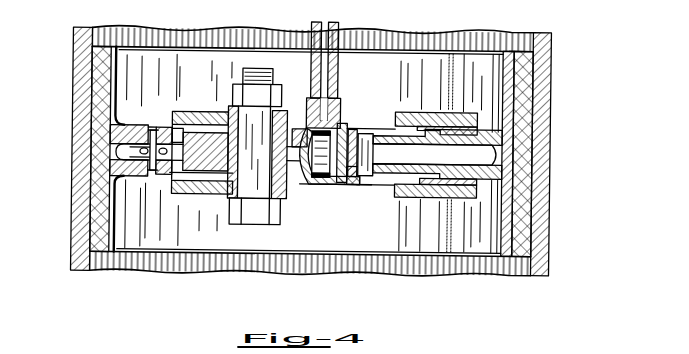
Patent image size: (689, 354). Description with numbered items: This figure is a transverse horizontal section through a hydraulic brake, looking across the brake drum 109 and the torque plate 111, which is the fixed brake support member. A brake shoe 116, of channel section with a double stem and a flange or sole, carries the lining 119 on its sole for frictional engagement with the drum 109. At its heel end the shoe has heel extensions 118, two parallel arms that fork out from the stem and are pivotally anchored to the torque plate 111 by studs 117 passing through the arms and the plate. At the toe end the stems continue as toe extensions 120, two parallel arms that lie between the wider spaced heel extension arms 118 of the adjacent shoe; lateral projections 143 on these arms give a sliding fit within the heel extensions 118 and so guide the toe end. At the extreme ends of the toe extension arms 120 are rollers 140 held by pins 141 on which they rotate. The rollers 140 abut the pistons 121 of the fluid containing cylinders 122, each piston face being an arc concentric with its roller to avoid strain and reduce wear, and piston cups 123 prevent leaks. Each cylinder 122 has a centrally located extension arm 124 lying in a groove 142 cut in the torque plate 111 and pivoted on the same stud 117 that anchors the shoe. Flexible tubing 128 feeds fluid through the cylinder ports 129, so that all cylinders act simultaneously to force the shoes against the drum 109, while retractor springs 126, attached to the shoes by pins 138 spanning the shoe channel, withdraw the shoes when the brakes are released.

The brake drum 109 is at (79, 91).
The torque plate 111 is at (194, 142).
The brake shoes 116 is at (124, 174).
The studs 117 is at (252, 191).
The heel extensions 118 is at (217, 113).
The lining 119 is at (92, 119).
The toe extensions 120 is at (445, 158).
The pistons 121 is at (354, 183).
The cylinders 122 is at (298, 184).
The piston cups 123 is at (348, 128).
The cylinder extension arms 124 is at (297, 129).
The retractor springs 126 is at (117, 150).
The flexible tubing 128 is at (337, 32).
The cylinder ports 129 is at (338, 100).
The pins 138 is at (153, 132).
The rollers 140 is at (383, 151).
The pins 141 is at (373, 182).
The grooves 142 is at (213, 157).
The lateral projections 143 is at (448, 126).